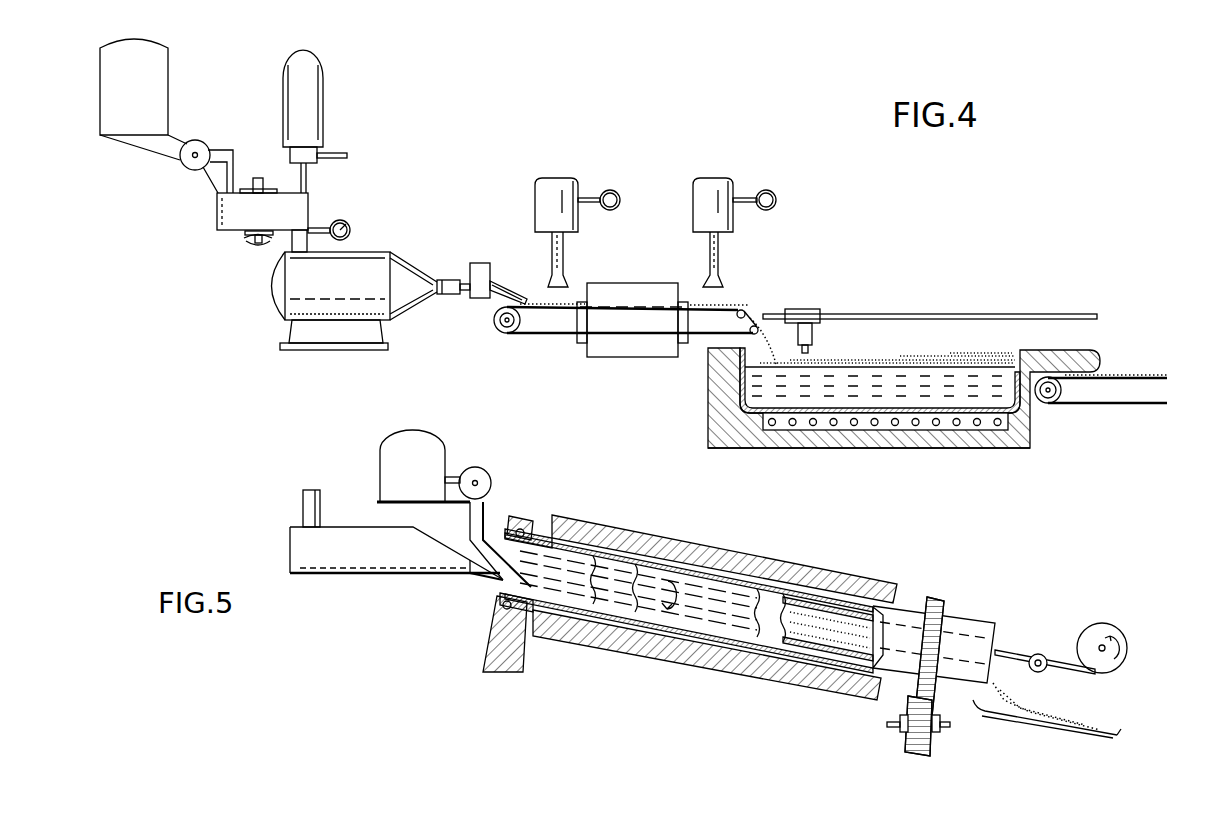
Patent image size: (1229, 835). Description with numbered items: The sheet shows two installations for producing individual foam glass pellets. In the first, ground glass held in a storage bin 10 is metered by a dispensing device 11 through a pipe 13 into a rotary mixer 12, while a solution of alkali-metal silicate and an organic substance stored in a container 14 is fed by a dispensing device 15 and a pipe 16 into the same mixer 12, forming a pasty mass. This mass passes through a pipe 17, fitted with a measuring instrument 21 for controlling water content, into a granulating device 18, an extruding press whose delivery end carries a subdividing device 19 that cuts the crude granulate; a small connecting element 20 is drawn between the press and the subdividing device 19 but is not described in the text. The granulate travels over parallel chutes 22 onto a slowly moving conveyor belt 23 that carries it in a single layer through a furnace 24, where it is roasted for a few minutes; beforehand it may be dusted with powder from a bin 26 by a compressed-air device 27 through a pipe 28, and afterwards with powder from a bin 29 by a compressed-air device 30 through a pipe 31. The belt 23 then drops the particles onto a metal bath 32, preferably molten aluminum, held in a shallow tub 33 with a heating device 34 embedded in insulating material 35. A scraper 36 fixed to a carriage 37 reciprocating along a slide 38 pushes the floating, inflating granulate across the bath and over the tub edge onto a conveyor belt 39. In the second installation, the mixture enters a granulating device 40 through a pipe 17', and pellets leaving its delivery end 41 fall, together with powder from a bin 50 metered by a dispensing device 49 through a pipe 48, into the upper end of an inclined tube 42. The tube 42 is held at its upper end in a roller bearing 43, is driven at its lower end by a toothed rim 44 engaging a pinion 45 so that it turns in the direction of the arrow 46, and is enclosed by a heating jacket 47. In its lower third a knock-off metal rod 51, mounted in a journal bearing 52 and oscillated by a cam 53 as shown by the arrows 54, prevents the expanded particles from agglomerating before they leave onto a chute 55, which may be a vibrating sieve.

In FIG. 4, the storage bin 10 is at (155, 87).
In FIG. 4, the dispensing device 11 is at (184, 160).
In FIG. 4, the rotary mixer 12 is at (225, 219).
In FIG. 4, the pipe 13 is at (218, 157).
In FIG. 4, the container 14 is at (308, 88).
In FIG. 4, the dispensing device 15 is at (290, 155).
In FIG. 4, the pipe 16 is at (307, 180).
In FIG. 4, the pipe 17 is at (274, 249).
In FIG. 4, the granulating device 18 is at (310, 288).
In FIG. 4, the subdividing device 19 is at (477, 263).
In FIG. 4, the nozzle connector 20 is at (448, 280).
In FIG. 4, the measuring instrument 21 is at (350, 225).
In FIG. 4, the chutes 22 is at (504, 288).
In FIG. 4, the conveyor belt 23 is at (545, 338).
In FIG. 4, the furnace 24 is at (624, 300).
In FIG. 4, the bin 26 is at (552, 197).
In FIG. 4, the compressed-air device 27 is at (611, 190).
In FIG. 4, the pipe 28 is at (563, 250).
In FIG. 4, the bin 29 is at (710, 194).
In FIG. 4, the compressed-air device 30 is at (767, 190).
In FIG. 4, the pipe 31 is at (719, 249).
In FIG. 4, the metal bath 32 is at (763, 382).
In FIG. 4, the tub 33 is at (750, 408).
In FIG. 4, the heating device 34 is at (905, 427).
In FIG. 4, the insulating material 35 is at (975, 440).
In FIG. 4, the scraper 36 is at (812, 334).
In FIG. 4, the carriage 37 is at (805, 309).
In FIG. 4, the slide 38 is at (931, 314).
In FIG. 4, the conveyor belt 39 is at (1133, 405).
In FIG. 5, the pipe 17' is at (288, 506).
In FIG. 5, the granulating device 40 is at (372, 553).
In FIG. 5, the delivery end 41 is at (477, 578).
In FIG. 5, the inclined tube 42 is at (635, 599).
In FIG. 5, the roller bearing 43 is at (521, 516).
In FIG. 5, the toothed rim 44 is at (941, 601).
In FIG. 5, the pinion 45 is at (928, 743).
In FIG. 5, the arrow 46 is at (681, 599).
In FIG. 5, the heating jacket 47 is at (727, 660).
In FIG. 5, the pipe 48 is at (471, 521).
In FIG. 5, the dispensing device 49 is at (478, 472).
In FIG. 5, the bin 50 is at (408, 452).
In FIG. 5, the metal rod 51 is at (852, 627).
In FIG. 5, the journal bearing 52 is at (1038, 654).
In FIG. 5, the cam 53 is at (1121, 641).
In FIG. 5, the arrows 54 is at (783, 597).
In FIG. 5, the chute 55 is at (1060, 728).